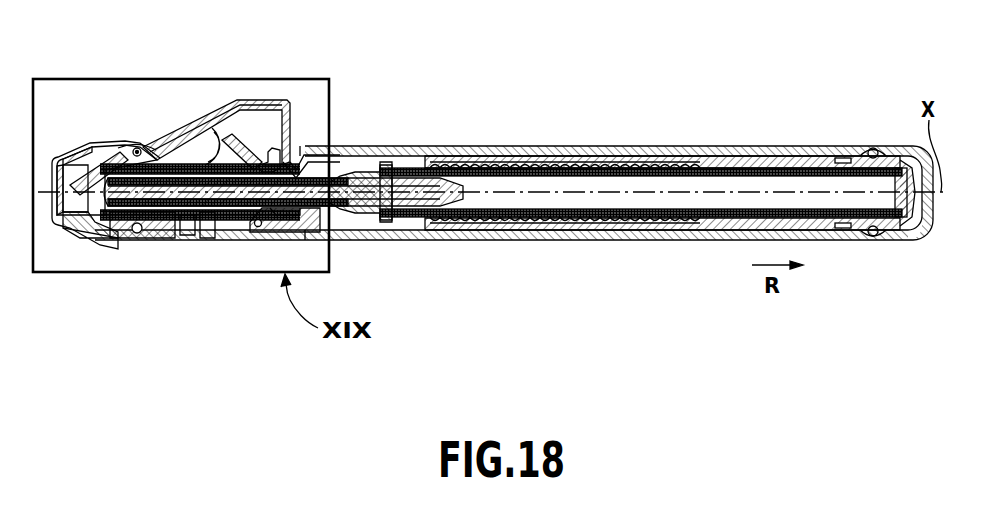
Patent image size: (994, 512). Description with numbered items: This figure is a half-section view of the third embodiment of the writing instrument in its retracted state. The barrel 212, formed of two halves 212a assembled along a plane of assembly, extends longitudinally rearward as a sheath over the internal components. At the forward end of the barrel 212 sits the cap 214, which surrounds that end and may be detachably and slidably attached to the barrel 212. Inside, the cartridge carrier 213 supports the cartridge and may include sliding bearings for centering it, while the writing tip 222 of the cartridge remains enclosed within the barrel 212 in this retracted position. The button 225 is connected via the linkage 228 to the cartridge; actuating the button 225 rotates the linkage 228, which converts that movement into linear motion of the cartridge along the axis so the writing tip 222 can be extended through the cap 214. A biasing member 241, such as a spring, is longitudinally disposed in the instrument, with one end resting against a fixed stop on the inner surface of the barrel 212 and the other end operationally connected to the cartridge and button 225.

The cartridge carrier 213 is at (424, 158).
The biasing member 241 is at (604, 162).
The barrel 212 is at (643, 192).
The barrel half 212a is at (532, 156).
The cap 214 is at (80, 240).
The writing tip 222 is at (110, 238).
The button 225 is at (171, 124).
The linkage 228 is at (253, 160).